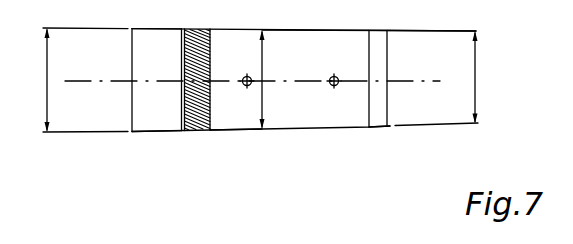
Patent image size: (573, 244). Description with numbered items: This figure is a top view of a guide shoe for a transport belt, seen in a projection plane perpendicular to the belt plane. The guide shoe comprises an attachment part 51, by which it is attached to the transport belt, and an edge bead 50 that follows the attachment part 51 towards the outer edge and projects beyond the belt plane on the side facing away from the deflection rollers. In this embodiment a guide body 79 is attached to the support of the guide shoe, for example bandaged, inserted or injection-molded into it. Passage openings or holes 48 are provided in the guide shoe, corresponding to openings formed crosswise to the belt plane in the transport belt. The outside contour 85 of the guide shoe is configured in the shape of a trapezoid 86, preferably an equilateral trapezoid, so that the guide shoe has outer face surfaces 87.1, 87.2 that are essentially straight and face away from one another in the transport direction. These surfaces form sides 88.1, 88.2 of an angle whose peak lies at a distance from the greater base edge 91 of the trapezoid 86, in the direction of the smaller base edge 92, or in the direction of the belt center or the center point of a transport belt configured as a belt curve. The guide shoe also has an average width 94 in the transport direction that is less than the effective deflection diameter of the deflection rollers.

The passage openings or holes 48 is at (247, 87).
The edge bead 50 is at (147, 128).
The attachment part 51 is at (317, 118).
The guide body 79 is at (196, 130).
The outside contour 85 is at (357, 140).
The trapezoid 86 is at (267, 153).
The outer face surface 87.1 is at (292, 28).
The outer face surface 87.2 is at (232, 131).
The side of angle 88.1 is at (362, 29).
The side of angle 88.2 is at (373, 127).
The greater base edge 91 is at (128, 109).
The smaller base edge 92 is at (388, 106).
The average width 94 is at (263, 97).